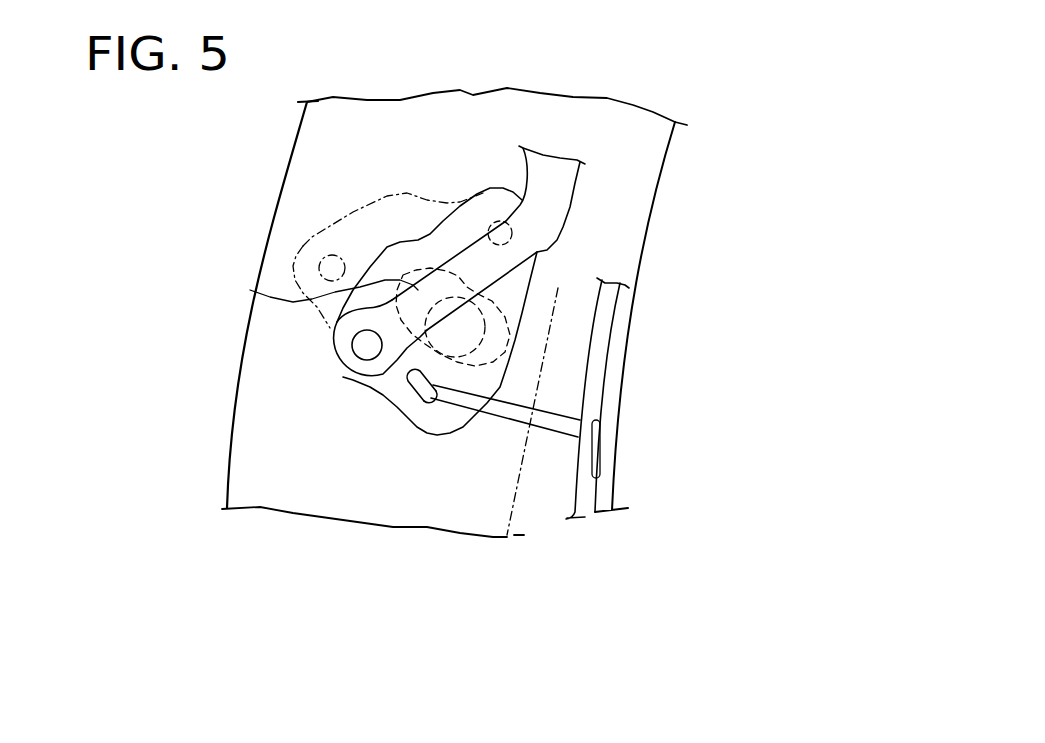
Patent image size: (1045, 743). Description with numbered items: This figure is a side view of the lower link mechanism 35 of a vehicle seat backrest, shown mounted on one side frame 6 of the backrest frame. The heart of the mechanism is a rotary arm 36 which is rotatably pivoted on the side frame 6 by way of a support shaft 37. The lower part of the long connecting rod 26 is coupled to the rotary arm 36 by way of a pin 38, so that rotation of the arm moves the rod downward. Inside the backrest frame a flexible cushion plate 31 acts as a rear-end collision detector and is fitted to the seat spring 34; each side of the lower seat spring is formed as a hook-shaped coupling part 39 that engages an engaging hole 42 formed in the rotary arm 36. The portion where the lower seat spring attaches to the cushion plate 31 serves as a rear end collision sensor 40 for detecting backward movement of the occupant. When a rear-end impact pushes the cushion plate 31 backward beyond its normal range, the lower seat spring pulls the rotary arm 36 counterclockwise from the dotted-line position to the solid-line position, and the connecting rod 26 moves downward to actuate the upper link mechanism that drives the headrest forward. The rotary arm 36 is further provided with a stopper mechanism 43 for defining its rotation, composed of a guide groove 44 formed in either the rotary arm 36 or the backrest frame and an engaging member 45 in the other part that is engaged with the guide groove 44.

The side frame 6 is at (241, 355).
The connecting rod 26 is at (567, 183).
The cushion plate 31 is at (604, 322).
The seat spring 34 is at (501, 405).
The lower link mechanism 35 is at (371, 447).
The rotary arm 36 is at (307, 241).
The support shaft 37 is at (499, 224).
The pin 38 is at (364, 346).
The hook-shaped coupling part 39 is at (433, 402).
The rear end collision sensor 40 is at (586, 460).
The engaging hole 42 is at (410, 392).
The stopper mechanism 43 is at (472, 313).
The guide groove 44 is at (250, 290).
The engaging member 45 is at (488, 298).